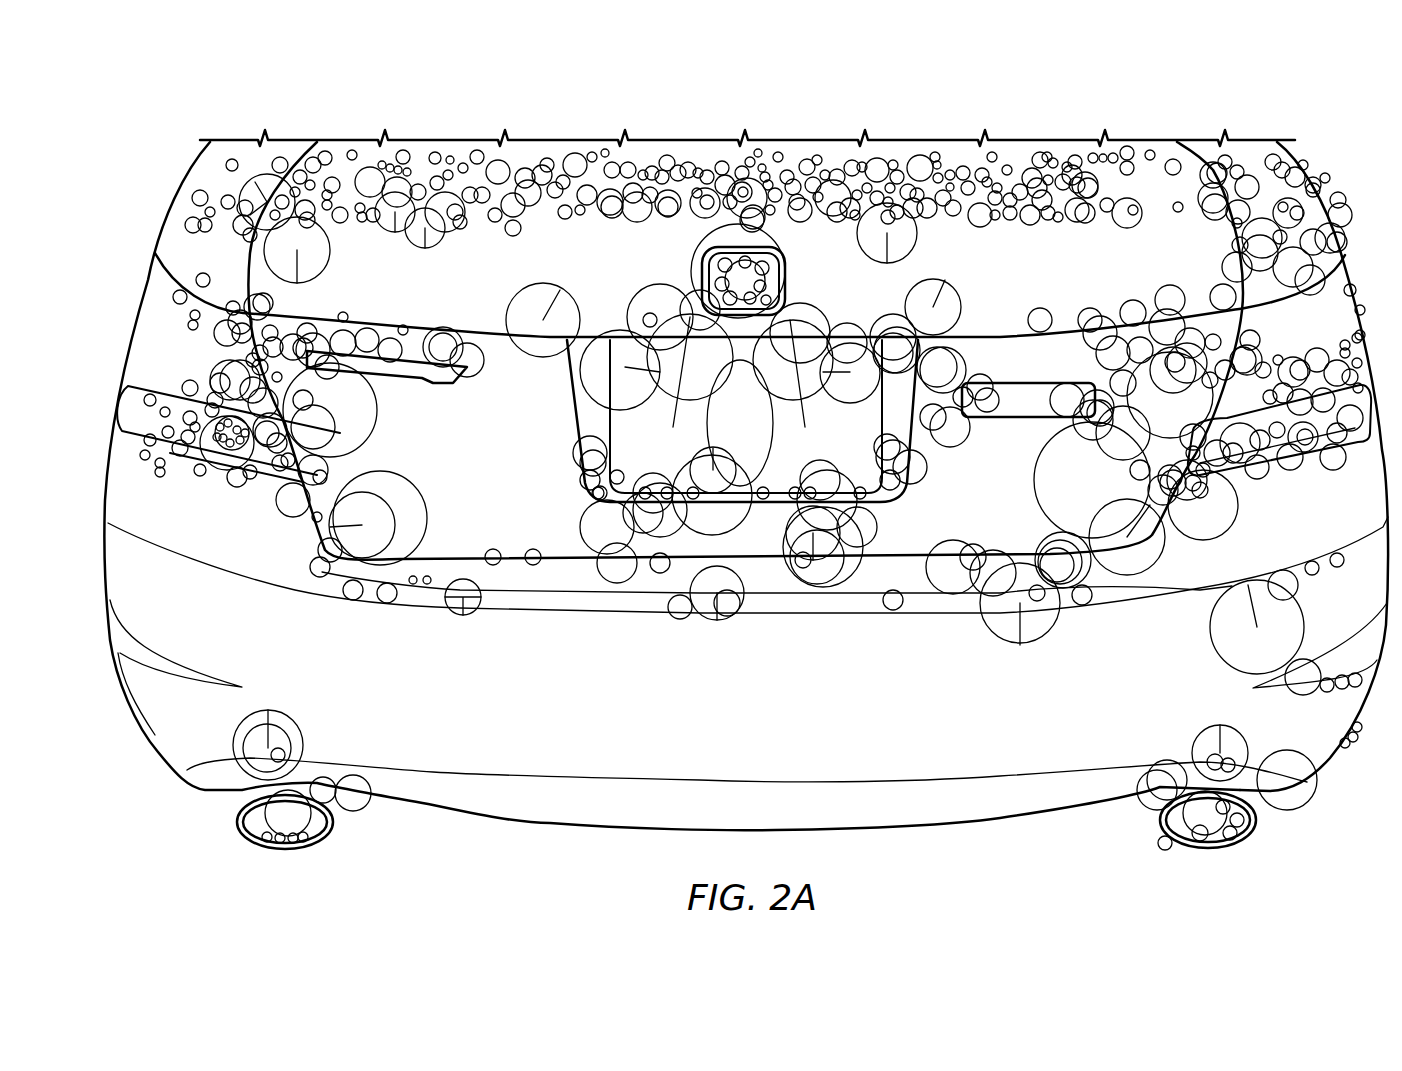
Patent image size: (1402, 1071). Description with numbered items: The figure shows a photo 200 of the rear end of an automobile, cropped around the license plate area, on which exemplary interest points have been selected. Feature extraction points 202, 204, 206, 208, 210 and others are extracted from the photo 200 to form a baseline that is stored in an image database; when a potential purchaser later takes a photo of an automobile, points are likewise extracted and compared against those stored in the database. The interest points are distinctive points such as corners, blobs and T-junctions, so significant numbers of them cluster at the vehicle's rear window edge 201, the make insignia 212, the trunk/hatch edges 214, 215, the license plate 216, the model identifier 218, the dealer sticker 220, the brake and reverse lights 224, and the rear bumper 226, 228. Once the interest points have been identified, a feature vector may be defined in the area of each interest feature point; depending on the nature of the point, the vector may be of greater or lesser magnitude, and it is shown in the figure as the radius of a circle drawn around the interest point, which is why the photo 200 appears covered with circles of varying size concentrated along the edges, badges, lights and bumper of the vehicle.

The photo 200 is at (663, 102).
The rear window edge 201 is at (197, 170).
The feature extraction point 202 is at (786, 272).
The feature extraction point 204 is at (530, 298).
The feature extraction point 206 is at (330, 262).
The feature extraction point 208 is at (853, 604).
The feature extraction point 210 is at (632, 532).
The make insignia 212 is at (785, 247).
The trunk/hatch edge 214 is at (995, 337).
The trunk/hatch edge 215 is at (863, 548).
The license plate 216 is at (826, 307).
The model identifier 218 is at (393, 387).
The dealer sticker 220 is at (987, 419).
The brake and reverse lights 224 is at (1277, 474).
The rear bumper 226 is at (247, 738).
The rear bumper 228 is at (455, 600).